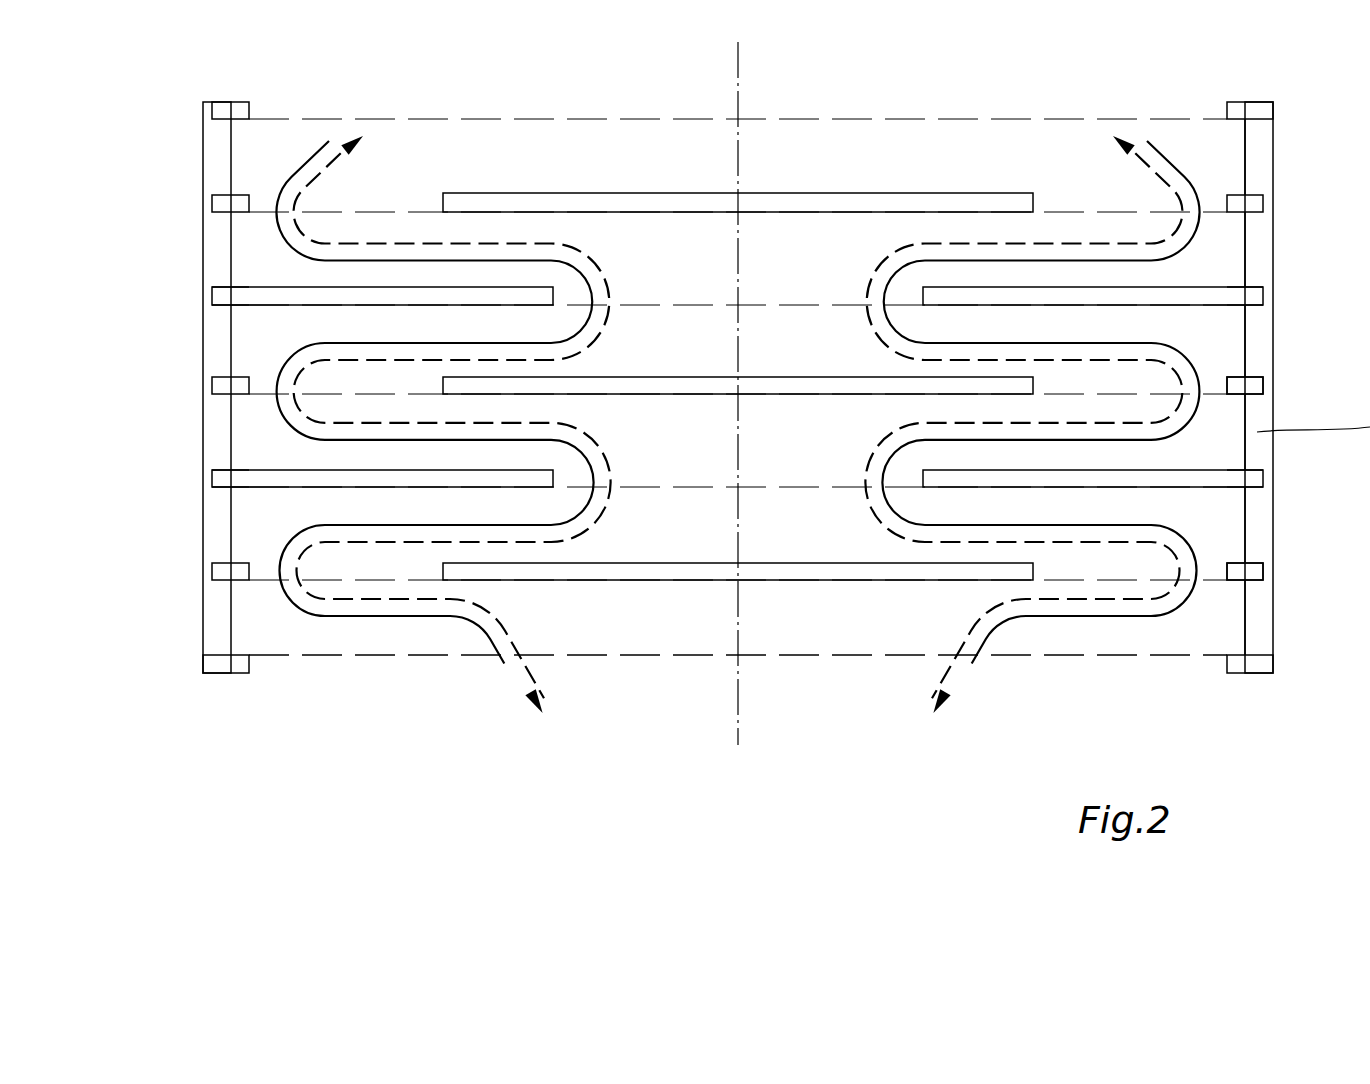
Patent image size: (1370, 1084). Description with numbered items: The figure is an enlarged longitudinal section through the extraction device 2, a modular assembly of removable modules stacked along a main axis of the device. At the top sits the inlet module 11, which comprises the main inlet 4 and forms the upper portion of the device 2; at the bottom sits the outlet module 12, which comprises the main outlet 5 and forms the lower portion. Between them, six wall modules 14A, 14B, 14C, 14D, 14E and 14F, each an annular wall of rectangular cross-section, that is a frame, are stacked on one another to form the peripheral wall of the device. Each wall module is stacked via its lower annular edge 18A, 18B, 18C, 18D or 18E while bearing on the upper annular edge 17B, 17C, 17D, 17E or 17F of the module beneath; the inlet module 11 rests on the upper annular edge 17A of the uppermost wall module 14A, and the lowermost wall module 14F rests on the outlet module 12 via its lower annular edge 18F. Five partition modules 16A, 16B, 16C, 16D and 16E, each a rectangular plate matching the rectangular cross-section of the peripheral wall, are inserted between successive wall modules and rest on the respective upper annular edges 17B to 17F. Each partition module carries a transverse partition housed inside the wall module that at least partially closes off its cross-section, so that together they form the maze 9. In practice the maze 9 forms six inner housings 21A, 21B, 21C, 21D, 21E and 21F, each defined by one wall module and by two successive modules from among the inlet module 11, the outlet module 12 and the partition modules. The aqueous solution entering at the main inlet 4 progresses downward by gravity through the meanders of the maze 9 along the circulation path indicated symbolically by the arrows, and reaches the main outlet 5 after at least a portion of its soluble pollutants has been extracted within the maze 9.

The extraction device 2 is at (155, 120).
The main inlet 4 is at (1050, 106).
The main outlet 5 is at (1152, 669).
The maze 9 is at (782, 260).
The inlet module 11 is at (1246, 108).
The outlet module 12 is at (222, 673).
The wall module 14A is at (1259, 163).
The wall module 14B is at (1260, 265).
The wall module 14C is at (1259, 361).
The wall module 14D is at (1259, 455).
The wall module 14E is at (1259, 543).
The wall module 14F is at (1259, 636).
The partition module 16A is at (815, 205).
The partition module 16B is at (1192, 297).
The partition module 16C is at (1238, 378).
The partition module 16D is at (1190, 478).
The partition module 16E is at (1238, 562).
The upper annular edge 17A is at (222, 101).
The upper annular edge 17B is at (222, 194).
The upper annular edge 17C is at (222, 286).
The upper annular edge 17D is at (222, 374).
The upper annular edge 17E is at (222, 467).
The upper annular edge 17F is at (222, 562).
The lower annular edge 18A is at (1280, 207).
The lower annular edge 18B is at (1280, 296).
The lower annular edge 18C is at (1280, 386).
The lower annular edge 18D is at (1280, 479).
The lower annular edge 18E is at (1280, 573).
The lower annular edge 18F is at (1280, 664).
The inner housing 21A is at (738, 181).
The inner housing 21B is at (738, 270).
The inner housing 21C is at (738, 361).
The inner housing 21D is at (738, 453).
The inner housing 21E is at (738, 545).
The inner housing 21F is at (738, 628).